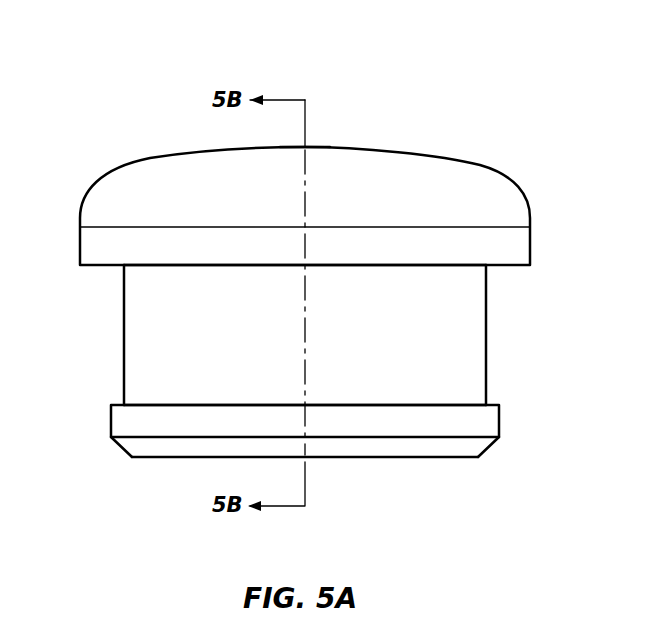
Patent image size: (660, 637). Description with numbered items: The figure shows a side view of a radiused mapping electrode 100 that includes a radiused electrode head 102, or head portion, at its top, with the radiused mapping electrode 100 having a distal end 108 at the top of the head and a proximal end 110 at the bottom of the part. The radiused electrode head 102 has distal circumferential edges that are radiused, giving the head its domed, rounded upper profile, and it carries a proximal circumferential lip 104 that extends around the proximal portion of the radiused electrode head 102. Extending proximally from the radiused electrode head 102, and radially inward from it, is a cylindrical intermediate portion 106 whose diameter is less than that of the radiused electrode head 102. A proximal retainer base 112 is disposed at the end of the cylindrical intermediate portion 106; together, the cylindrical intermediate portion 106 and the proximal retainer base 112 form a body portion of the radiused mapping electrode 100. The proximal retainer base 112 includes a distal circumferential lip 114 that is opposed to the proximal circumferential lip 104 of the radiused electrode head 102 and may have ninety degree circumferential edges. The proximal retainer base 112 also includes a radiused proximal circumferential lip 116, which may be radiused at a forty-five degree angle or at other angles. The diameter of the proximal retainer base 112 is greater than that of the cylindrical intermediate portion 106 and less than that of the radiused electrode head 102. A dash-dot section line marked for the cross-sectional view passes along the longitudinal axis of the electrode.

The radiused mapping electrode 100 is at (140, 101).
The radiused electrode head 102 is at (458, 183).
The proximal circumferential lip 104 is at (432, 265).
The cylindrical intermediate portion 106 is at (162, 342).
The distal end 108 is at (302, 150).
The proximal end 110 is at (438, 457).
The proximal retainer base 112 is at (375, 423).
The distal circumferential lip 114 is at (437, 405).
The radiused proximal circumferential lip 116 is at (490, 450).